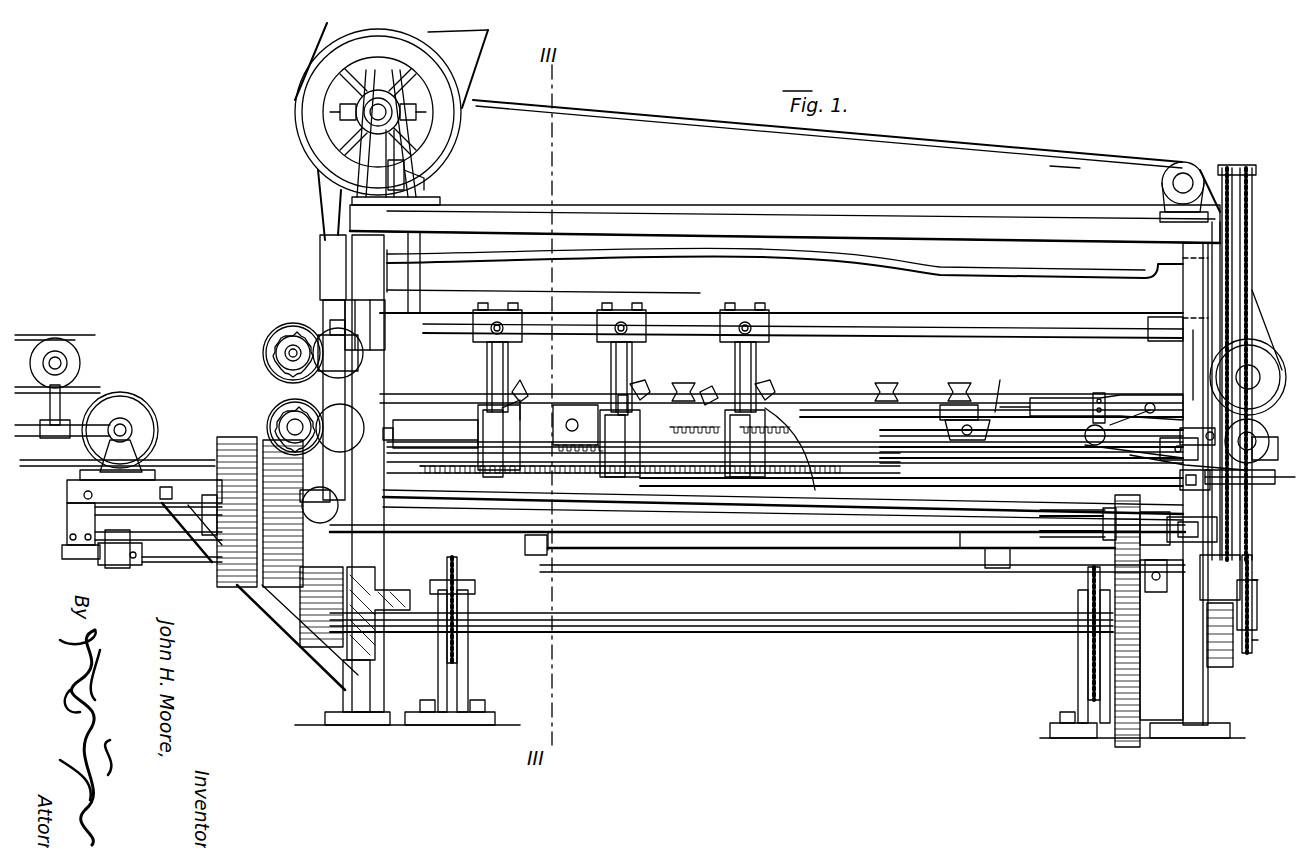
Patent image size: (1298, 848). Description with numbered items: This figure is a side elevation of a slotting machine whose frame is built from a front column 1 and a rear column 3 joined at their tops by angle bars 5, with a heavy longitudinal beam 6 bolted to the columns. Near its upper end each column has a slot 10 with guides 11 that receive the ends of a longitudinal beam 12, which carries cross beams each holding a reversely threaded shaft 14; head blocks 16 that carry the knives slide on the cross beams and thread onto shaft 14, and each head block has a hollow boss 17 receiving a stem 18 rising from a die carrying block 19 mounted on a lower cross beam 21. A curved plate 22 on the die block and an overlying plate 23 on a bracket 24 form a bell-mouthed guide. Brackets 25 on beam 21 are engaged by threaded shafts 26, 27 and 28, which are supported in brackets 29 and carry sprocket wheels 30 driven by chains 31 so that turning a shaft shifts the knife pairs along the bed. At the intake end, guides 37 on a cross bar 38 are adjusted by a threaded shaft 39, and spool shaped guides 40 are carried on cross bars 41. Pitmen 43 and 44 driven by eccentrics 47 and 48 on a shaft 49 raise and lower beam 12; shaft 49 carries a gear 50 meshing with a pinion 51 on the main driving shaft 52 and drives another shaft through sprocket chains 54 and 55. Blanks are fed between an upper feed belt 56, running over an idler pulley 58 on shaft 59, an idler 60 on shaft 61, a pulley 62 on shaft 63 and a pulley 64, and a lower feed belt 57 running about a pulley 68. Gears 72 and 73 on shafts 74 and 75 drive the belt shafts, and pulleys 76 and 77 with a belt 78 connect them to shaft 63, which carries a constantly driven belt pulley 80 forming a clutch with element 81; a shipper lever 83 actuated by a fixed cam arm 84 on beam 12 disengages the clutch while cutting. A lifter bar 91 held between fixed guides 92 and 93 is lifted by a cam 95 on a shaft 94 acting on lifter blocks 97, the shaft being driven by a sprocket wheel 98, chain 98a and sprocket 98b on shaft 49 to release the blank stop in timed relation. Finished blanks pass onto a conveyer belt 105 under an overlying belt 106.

The front column 1 is at (1168, 366).
The rear column 3 is at (380, 385).
The angle bar 5 is at (740, 225).
The longitudinal beam 6 is at (757, 507).
The slot 10 is at (362, 325).
The guide 11 is at (378, 345).
The longitudinally extending beam 12 is at (803, 308).
The reversely threaded shaft 14 is at (621, 323).
The head block 16 is at (612, 350).
The hollow boss or guideway 17 is at (614, 370).
The finger or stem 18 is at (616, 385).
The die carrying block 19 is at (480, 412).
The cross beam 21 is at (470, 437).
The curved plate 22 is at (655, 392).
The plate 23 is at (645, 390).
The bracket 24 is at (518, 384).
The bracket 25 is at (500, 475).
The shaft 26 is at (906, 430).
The intermediate shaft 27 is at (920, 460).
The shaft 28 is at (870, 475).
The bracket 29 is at (1160, 462).
The sprocket wheel 30 is at (1258, 438).
The chain 31 is at (1243, 270).
The guide 37 is at (1110, 398).
The cross bar 38 is at (1090, 430).
The shaft 39 is at (1090, 447).
The spool shaped guide 40 is at (880, 398).
The cross bar 41 is at (968, 442).
The pitman 43 is at (1220, 510).
The pitman 44 is at (303, 547).
The eccentric 47 is at (1230, 660).
The eccentric 48 is at (340, 640).
The shaft 49 is at (638, 633).
The gear 50 is at (1128, 710).
The pinion 51 is at (1110, 540).
The main driving shaft 52 is at (958, 550).
The sprocket chain 54 is at (1085, 625).
The sprocket chain 55 is at (460, 572).
The upper feed belt 56 is at (955, 145).
The lower feed belt 57 is at (1005, 387).
The idler pulley 58 is at (1262, 388).
The shaft 59 is at (1262, 372).
The idler 60 is at (1170, 185).
The shaft 61 is at (1170, 180).
The pulley 62 is at (1268, 485).
The shaft 63 is at (400, 128).
The pulley 64 is at (320, 325).
The pulley 68 is at (300, 470).
The gear 72 is at (276, 348).
The gear 73 is at (288, 408).
The shaft 74 is at (285, 355).
The shaft 75 is at (300, 435).
The pulley 76 is at (286, 334).
The pulley 77 is at (268, 412).
The belt 78 is at (320, 198).
The belt pulley 80 is at (455, 66).
The clutch element 81 is at (428, 66).
The shipper lever 83 is at (428, 170).
The fixed cam arm 84 is at (420, 190).
The lifter bar 91 is at (630, 549).
The fixed guide 92 is at (525, 545).
The fixed guide 93 is at (998, 568).
The shaft 94 is at (178, 562).
The cam 95 is at (122, 566).
The lifter block 97 is at (115, 562).
The sprocket wheel 98 is at (1252, 560).
The sprocket chain 98a is at (1252, 595).
The sprocket 98b is at (1252, 645).
The conveyer belt 105 is at (90, 395).
The overlying belt 106 is at (38, 342).